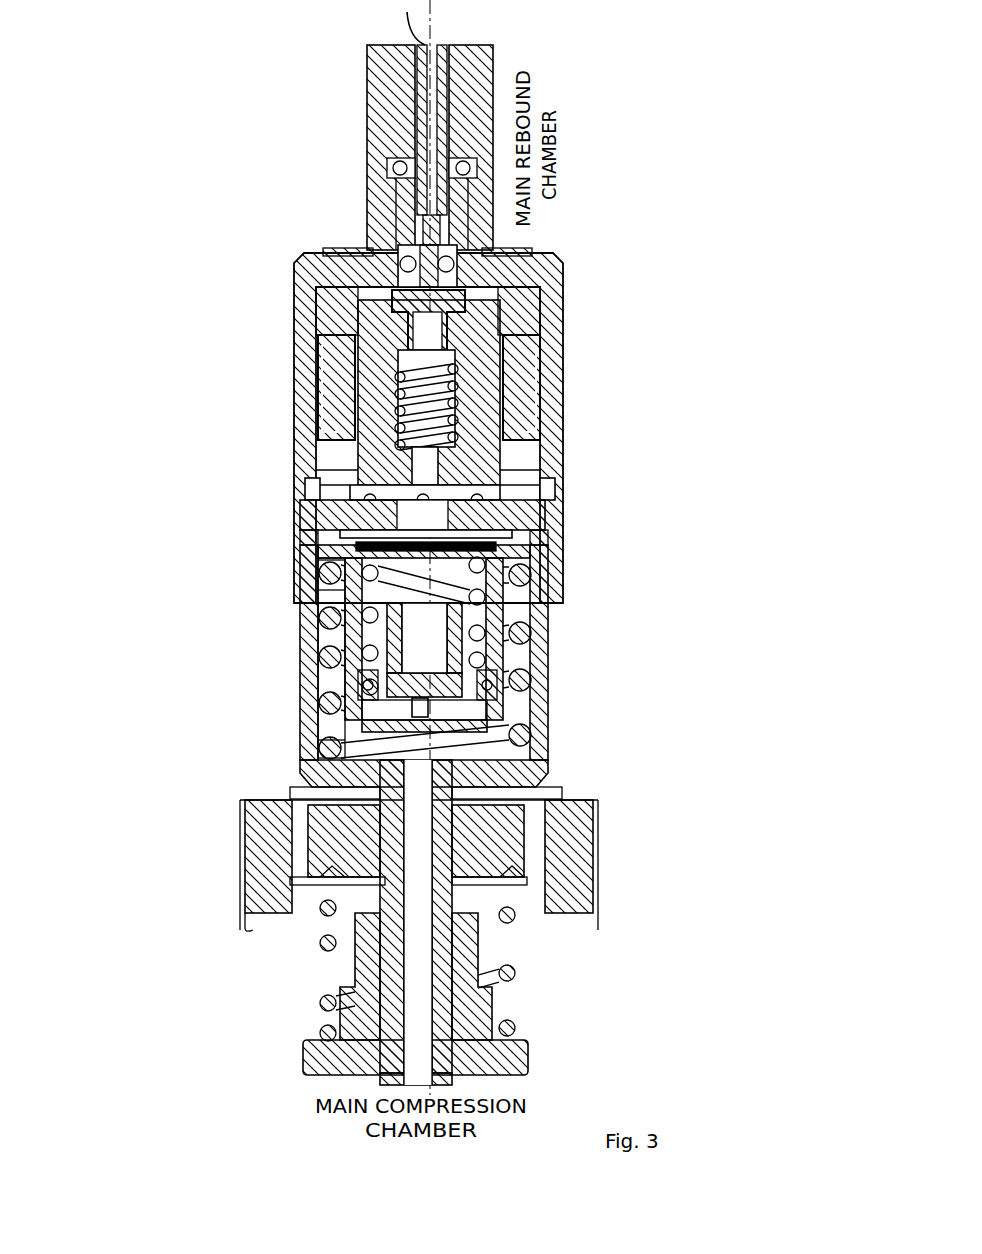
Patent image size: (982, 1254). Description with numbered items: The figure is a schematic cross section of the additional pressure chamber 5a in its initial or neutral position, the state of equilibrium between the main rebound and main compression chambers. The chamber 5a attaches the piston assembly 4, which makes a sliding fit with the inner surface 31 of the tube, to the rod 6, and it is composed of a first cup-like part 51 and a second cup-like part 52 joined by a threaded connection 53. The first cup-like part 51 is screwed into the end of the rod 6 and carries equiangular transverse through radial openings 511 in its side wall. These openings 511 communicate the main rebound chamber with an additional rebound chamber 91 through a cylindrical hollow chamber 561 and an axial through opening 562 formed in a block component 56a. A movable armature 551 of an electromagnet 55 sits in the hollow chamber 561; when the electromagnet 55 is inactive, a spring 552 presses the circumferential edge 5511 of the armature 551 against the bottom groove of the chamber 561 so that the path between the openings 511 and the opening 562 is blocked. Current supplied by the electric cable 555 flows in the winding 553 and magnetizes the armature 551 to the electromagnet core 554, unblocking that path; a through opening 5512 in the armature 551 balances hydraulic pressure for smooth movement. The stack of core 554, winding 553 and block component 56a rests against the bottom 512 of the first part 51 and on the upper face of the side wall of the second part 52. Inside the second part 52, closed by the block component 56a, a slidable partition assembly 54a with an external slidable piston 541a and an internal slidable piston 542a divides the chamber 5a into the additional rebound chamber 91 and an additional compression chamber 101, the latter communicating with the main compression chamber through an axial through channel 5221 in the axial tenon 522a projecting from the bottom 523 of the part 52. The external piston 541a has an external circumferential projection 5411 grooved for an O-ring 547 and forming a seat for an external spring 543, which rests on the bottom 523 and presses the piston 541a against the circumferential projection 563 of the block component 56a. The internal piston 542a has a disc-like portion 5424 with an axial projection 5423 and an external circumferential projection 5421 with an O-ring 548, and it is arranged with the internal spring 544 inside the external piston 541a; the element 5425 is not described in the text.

The electric cable 555 is at (410, 27).
The rod 6 is at (380, 111).
The electromagnet core 554 is at (300, 287).
The electromagnet 55 is at (297, 340).
The electromagnet winding 553 is at (340, 380).
The movable armature 551 is at (300, 423).
The circumferential edge 5511 is at (345, 470).
The block component 56a is at (300, 505).
The circumferential projection 563 is at (283, 528).
The external circumferential projection 5411 is at (290, 588).
The slidable partition assembly 54a is at (327, 635).
The internal slidable piston 542a is at (340, 683).
The disc-like portion 5424 is at (340, 693).
The axial projection 5423 is at (303, 717).
The additional compression chamber 101 is at (323, 730).
The bottom 523 is at (303, 778).
The inner surface 31 is at (240, 932).
The piston assembly 4 is at (288, 958).
The axial tenon 522a is at (305, 1040).
The axial through channel 5221 is at (405, 1077).
The bottom 512 is at (500, 268).
The first cup-like part 51 is at (545, 318).
The spring 552 is at (440, 393).
The through opening 5512 is at (428, 460).
The additional pressure chamber 5a is at (572, 458).
The transverse through radial openings 511 is at (548, 493).
The cylindrical hollow chamber 561 is at (452, 497).
The axial through opening 562 is at (428, 512).
The threaded connection 53 is at (520, 556).
The O-ring 547 is at (520, 585).
The external slidable piston 541a is at (505, 595).
The additional rebound chamber 91 is at (545, 628).
The second cup-like part 52 is at (548, 650).
The internal spring 544 is at (470, 640).
The external spring 543 is at (505, 697).
The O-ring 548 is at (547, 718).
The external circumferential projection 5421 is at (547, 740).
The base plate 5425 is at (547, 760).